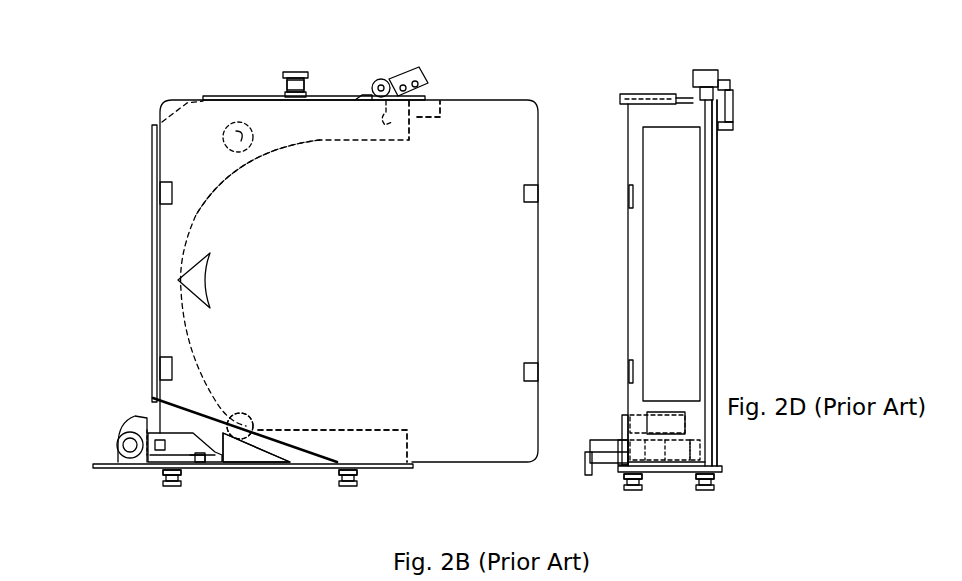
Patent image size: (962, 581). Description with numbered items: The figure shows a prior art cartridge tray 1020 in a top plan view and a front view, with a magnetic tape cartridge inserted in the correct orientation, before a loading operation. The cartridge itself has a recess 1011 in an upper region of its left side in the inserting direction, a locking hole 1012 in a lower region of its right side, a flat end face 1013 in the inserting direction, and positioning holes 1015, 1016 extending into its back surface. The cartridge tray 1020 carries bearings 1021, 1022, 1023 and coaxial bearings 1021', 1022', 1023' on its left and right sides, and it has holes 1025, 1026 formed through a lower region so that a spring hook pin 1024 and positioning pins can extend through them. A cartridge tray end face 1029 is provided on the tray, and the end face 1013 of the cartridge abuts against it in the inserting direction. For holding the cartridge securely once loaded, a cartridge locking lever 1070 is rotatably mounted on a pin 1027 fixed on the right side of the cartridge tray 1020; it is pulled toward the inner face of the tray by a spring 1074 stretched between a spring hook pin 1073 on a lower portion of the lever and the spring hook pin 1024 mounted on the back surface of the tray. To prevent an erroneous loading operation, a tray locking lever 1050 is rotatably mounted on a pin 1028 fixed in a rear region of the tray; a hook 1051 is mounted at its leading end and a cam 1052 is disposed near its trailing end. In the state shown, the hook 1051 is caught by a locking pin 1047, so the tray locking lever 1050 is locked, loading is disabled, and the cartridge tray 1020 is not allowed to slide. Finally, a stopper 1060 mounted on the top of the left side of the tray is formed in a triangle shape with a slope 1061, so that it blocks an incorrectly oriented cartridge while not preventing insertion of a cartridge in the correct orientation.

In FIG. 2B, the recess 1011 is at (185, 410).
In FIG. 2B, the locking hole 1012 is at (440, 117).
In FIG. 2B, the end face 1013 is at (156, 250).
In FIG. 2B, the positioning hole 1015 is at (242, 143).
In FIG. 2B, the positioning hole 1016 is at (235, 420).
In FIG. 2B, the cartridge tray 1020 is at (307, 468).
In FIG. 2D, the cartridge tray 1020 is at (720, 232).
In FIG. 2B, the bearing 1021 is at (154, 501).
In FIG. 2D, the bearing 1021 is at (622, 507).
In FIG. 2B, the bearing 1021' is at (121, 487).
In FIG. 2D, the bearing 1021' is at (591, 491).
In FIG. 2B, the bearing 1022 is at (369, 503).
In FIG. 2D, the bearing 1022 is at (722, 507).
In FIG. 2B, the bearing 1022' is at (398, 487).
In FIG. 2D, the bearing 1022' is at (753, 491).
In FIG. 2B, the bearing 1023 is at (284, 56).
In FIG. 2B, the bearing 1023' is at (248, 73).
In FIG. 2D, the spring hook pin 1024 is at (730, 128).
In FIG. 2B, the hole 1025 is at (255, 140).
In FIG. 2B, the hole 1026 is at (240, 432).
In FIG. 2B, the pin 1027 is at (372, 84).
In FIG. 2B, the pin 1028 is at (117, 445).
In FIG. 2B, the cartridge tray end face 1029 is at (152, 180).
In FIG. 2B, the locking pin 1047 is at (198, 463).
In FIG. 2D, the locking pin 1047 is at (578, 462).
In FIG. 2B, the tray locking lever 1050 is at (165, 432).
In FIG. 2D, the hook 1051 is at (612, 437).
In FIG. 2B, the cam 1052 is at (140, 420).
In FIG. 2D, the cam 1052 is at (622, 423).
In FIG. 2B, the stopper 1060 is at (245, 466).
In FIG. 2B, the slope 1061 is at (247, 452).
In FIG. 2B, the cartridge locking lever 1070 is at (400, 72).
In FIG. 2D, the cartridge locking lever 1070 is at (705, 70).
In FIG. 2D, the spring hook pin 1073 is at (730, 82).
In FIG. 2B, the spring 1074 is at (390, 120).
In FIG. 2D, the spring 1074 is at (735, 108).